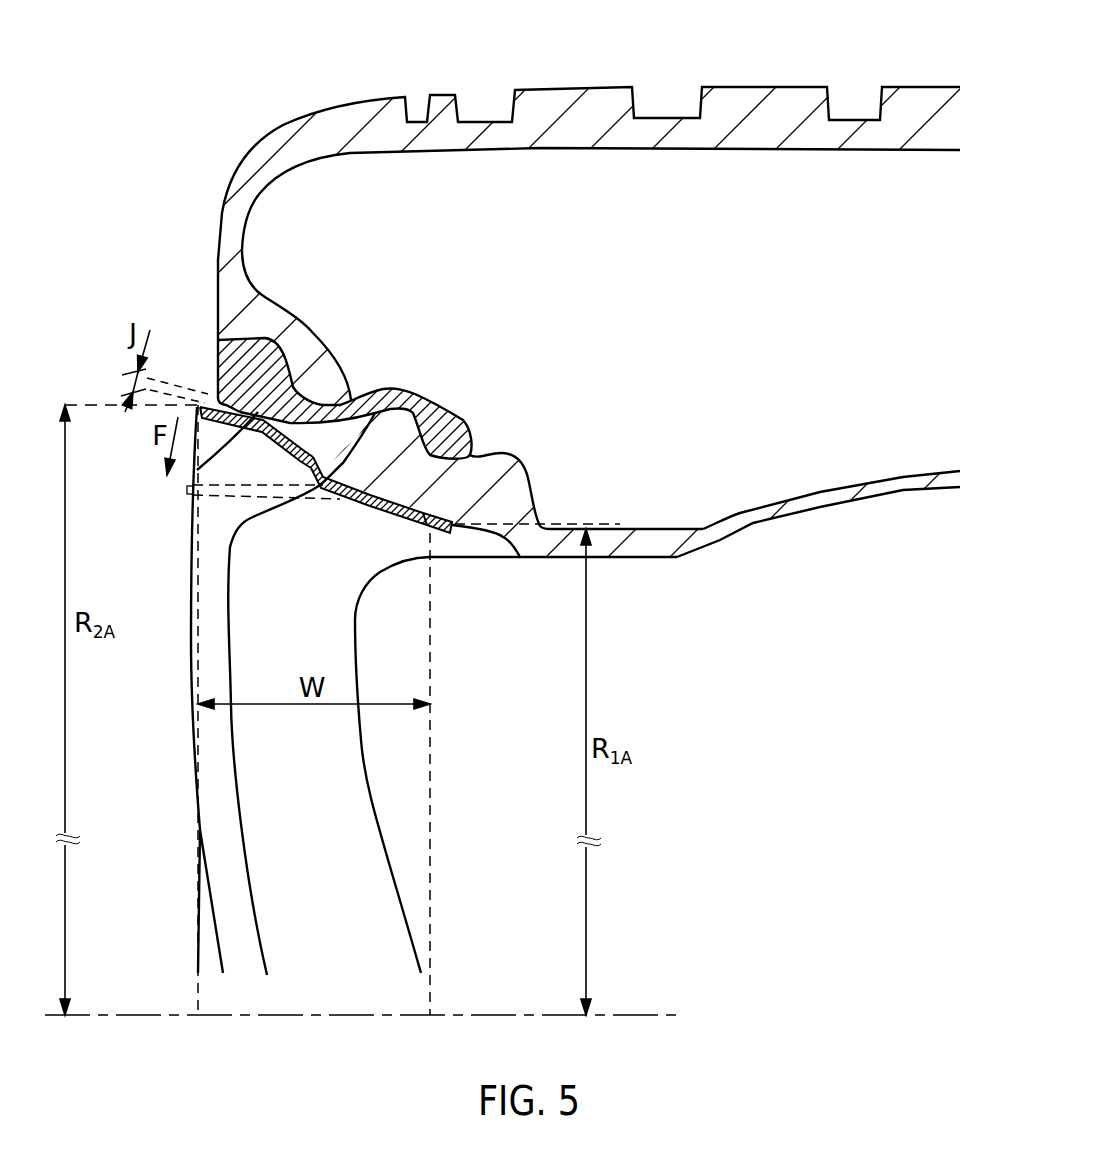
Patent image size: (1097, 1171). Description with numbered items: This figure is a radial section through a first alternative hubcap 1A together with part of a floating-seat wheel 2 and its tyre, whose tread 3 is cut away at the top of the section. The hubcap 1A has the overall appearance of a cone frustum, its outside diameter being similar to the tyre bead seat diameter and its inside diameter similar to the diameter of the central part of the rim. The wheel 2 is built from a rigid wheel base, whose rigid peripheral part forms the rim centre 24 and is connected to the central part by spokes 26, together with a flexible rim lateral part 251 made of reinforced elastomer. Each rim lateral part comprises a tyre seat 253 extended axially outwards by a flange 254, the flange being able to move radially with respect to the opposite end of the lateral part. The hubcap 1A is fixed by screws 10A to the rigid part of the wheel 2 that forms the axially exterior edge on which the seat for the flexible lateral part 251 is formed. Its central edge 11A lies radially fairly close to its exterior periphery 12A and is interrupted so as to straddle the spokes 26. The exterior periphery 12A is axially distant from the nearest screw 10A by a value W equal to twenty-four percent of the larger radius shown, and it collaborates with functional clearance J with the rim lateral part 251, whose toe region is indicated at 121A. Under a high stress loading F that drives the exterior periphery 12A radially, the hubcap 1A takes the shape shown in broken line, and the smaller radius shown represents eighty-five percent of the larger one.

The floating-seat wheel 2 is at (666, 730).
The tread 3 is at (758, 107).
The rim centre 24 is at (694, 565).
The spoke 26 is at (335, 801).
The rim lateral part 251 is at (407, 398).
The tyre seat 253 is at (320, 403).
The flange 254 is at (250, 373).
The hubcap 1A is at (263, 530).
The screw 10A is at (423, 547).
The central edge 11A is at (367, 523).
The exterior periphery 12A is at (258, 452).
The bead toe 121A is at (197, 470).